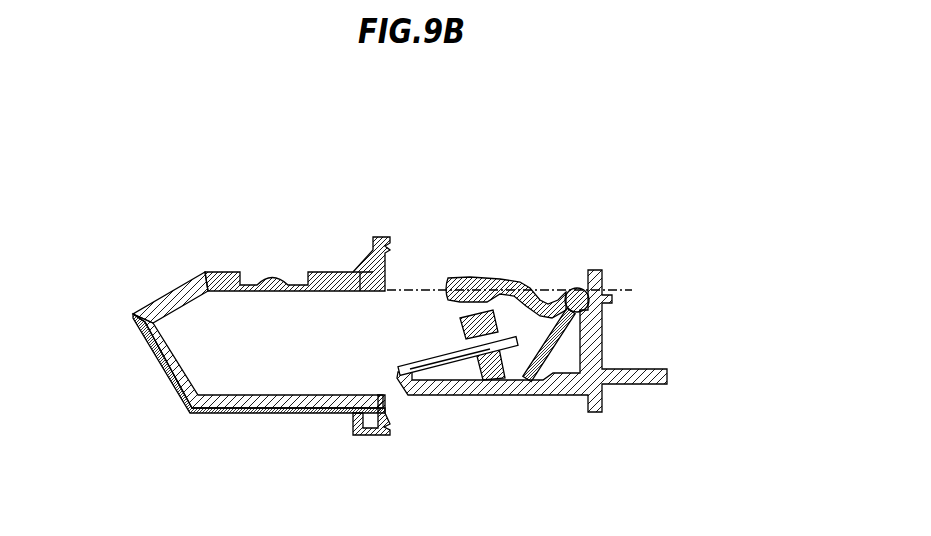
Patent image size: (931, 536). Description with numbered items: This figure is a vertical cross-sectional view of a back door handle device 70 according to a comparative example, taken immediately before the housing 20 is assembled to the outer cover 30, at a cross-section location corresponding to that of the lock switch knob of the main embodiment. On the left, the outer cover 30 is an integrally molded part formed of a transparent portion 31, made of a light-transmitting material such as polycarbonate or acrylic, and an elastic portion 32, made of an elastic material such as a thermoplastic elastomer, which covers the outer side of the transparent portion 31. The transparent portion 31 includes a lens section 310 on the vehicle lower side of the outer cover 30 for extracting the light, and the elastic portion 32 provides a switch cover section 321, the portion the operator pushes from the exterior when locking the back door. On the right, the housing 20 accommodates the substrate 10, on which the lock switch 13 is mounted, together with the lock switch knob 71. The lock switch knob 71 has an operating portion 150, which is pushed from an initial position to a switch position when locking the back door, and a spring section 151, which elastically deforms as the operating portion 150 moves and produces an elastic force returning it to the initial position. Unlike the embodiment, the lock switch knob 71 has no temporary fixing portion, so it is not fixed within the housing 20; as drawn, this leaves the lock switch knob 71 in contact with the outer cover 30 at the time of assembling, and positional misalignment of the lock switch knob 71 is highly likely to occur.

The back door handle device 70 is at (602, 287).
The lock switch knob 71 is at (616, 299).
The operating portion 150 is at (470, 282).
The spring section 151 is at (558, 335).
The lock switch 13 is at (480, 320).
The substrate 10 is at (418, 363).
The housing 20 is at (537, 388).
The outer cover 30 is at (212, 339).
The transparent portion 31 is at (291, 412).
The elastic portion 32 is at (293, 462).
The lens section 310 is at (170, 292).
The switch cover section 321 is at (272, 275).